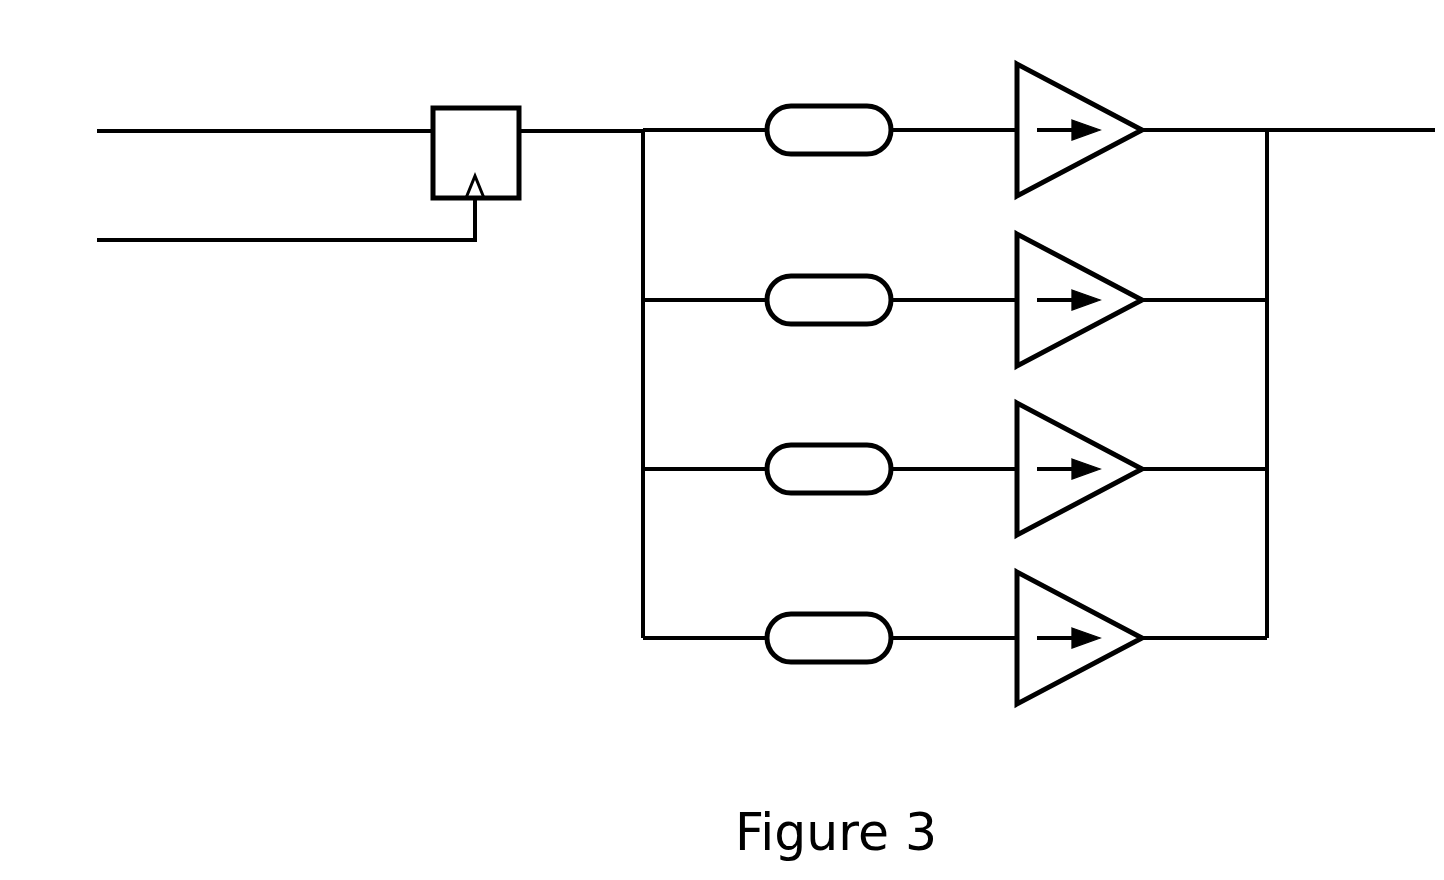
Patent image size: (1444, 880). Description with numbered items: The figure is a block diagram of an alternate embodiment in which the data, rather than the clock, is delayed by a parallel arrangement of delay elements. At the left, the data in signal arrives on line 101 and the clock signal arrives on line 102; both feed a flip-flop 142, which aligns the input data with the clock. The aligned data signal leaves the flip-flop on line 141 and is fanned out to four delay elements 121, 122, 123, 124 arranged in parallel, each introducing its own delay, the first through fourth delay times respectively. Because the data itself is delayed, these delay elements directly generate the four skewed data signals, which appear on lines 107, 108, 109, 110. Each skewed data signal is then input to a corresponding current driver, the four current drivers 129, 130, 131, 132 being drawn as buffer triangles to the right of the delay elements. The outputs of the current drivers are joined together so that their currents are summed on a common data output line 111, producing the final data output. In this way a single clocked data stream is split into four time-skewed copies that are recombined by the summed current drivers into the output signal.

The data in line 101 is at (214, 131).
The clock line 102 is at (192, 240).
The flip-flop 142 is at (470, 108).
The aligned data line 141 is at (595, 141).
The delay element 121 is at (800, 106).
The delay element 122 is at (800, 276).
The delay element 123 is at (800, 445).
The delay element 124 is at (800, 614).
The skewed data line 107 is at (960, 132).
The skewed data line 108 is at (960, 302).
The skewed data line 109 is at (960, 471).
The skewed data line 110 is at (960, 640).
The current driver 129 is at (1103, 151).
The current driver 130 is at (1103, 321).
The current driver 131 is at (1103, 490).
The current driver 132 is at (1103, 659).
The data output line 111 is at (1375, 132).